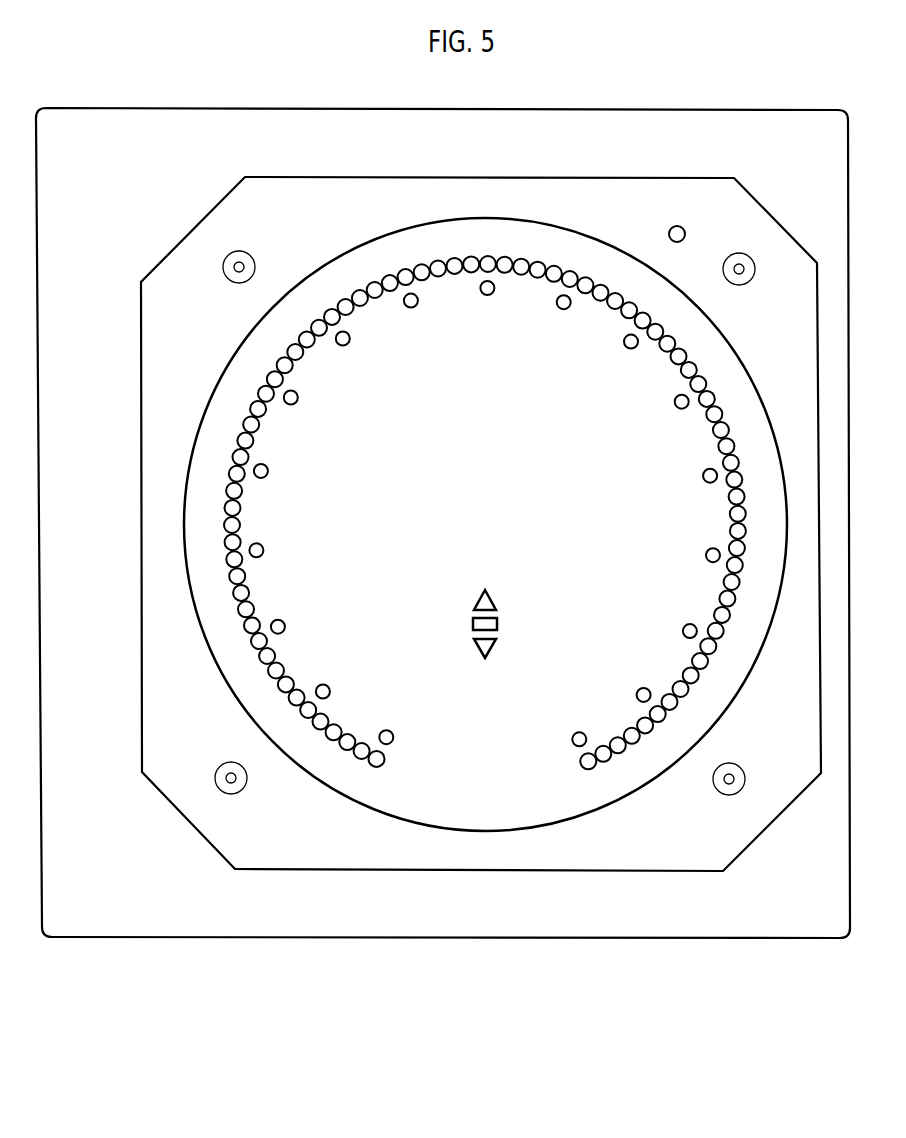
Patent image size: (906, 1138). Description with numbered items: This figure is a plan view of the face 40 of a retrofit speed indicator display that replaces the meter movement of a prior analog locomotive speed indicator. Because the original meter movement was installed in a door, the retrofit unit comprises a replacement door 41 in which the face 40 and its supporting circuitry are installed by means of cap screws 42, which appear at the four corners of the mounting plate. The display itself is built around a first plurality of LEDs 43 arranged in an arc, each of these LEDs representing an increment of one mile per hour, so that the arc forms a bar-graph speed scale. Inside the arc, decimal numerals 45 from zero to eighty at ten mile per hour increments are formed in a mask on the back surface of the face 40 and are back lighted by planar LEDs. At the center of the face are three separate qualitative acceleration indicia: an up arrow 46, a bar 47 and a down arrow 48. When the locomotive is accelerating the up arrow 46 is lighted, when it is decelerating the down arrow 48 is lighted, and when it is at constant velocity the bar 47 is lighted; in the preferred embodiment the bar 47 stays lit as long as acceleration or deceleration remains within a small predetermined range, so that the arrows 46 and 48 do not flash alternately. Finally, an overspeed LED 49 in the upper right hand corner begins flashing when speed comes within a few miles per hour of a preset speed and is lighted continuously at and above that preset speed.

The face 40 is at (200, 844).
The replacement door 41 is at (167, 938).
The cap screws 42 is at (243, 791).
The first plurality of LEDs 43 is at (251, 414).
The decimal numerals 45 is at (333, 496).
The up arrow 46 is at (497, 599).
The bar 47 is at (472, 624).
The down arrow 48 is at (493, 645).
The LED 49 is at (686, 234).